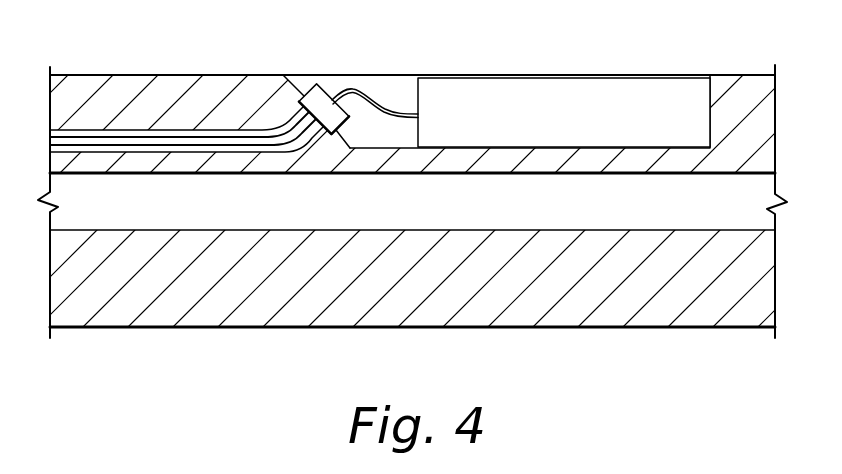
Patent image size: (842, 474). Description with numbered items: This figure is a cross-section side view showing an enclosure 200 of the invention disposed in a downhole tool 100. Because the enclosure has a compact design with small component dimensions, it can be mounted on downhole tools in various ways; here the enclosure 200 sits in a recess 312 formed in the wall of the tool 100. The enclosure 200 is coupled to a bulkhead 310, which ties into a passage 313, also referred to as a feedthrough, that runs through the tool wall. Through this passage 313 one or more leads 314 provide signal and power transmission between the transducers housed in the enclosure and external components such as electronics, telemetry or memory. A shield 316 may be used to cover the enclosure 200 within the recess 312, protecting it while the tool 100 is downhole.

The downhole tool 100 is at (752, 85).
The enclosure 200 is at (660, 97).
The bulkhead 310 is at (318, 92).
The recess 312 is at (390, 87).
The passage 313 is at (122, 131).
The leads 314 is at (193, 143).
The shield 316 is at (524, 80).